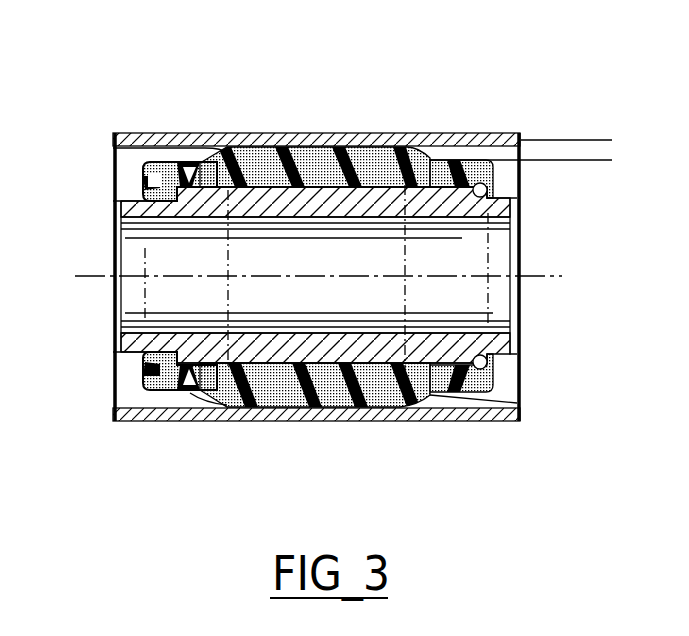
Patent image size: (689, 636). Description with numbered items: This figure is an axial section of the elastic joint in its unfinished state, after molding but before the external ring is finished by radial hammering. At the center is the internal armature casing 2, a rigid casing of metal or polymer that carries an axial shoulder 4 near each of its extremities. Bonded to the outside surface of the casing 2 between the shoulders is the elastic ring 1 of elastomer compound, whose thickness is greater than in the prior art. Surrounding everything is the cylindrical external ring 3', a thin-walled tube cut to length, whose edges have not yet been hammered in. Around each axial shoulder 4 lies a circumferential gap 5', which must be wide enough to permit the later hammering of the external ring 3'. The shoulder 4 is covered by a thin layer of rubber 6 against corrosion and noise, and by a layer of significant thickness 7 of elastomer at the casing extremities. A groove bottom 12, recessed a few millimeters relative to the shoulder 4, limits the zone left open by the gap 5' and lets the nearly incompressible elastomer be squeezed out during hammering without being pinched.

The elastic ring 1 is at (338, 378).
The internal armature casing 2 is at (311, 137).
The cylindrical external ring 3' is at (194, 92).
The axial shoulder 4 is at (150, 179).
The circumferential gap 5' is at (533, 133).
The thin layer of rubber 6 is at (190, 394).
The layer of significant thickness 7 is at (146, 385).
The groove bottom 12 is at (403, 144).